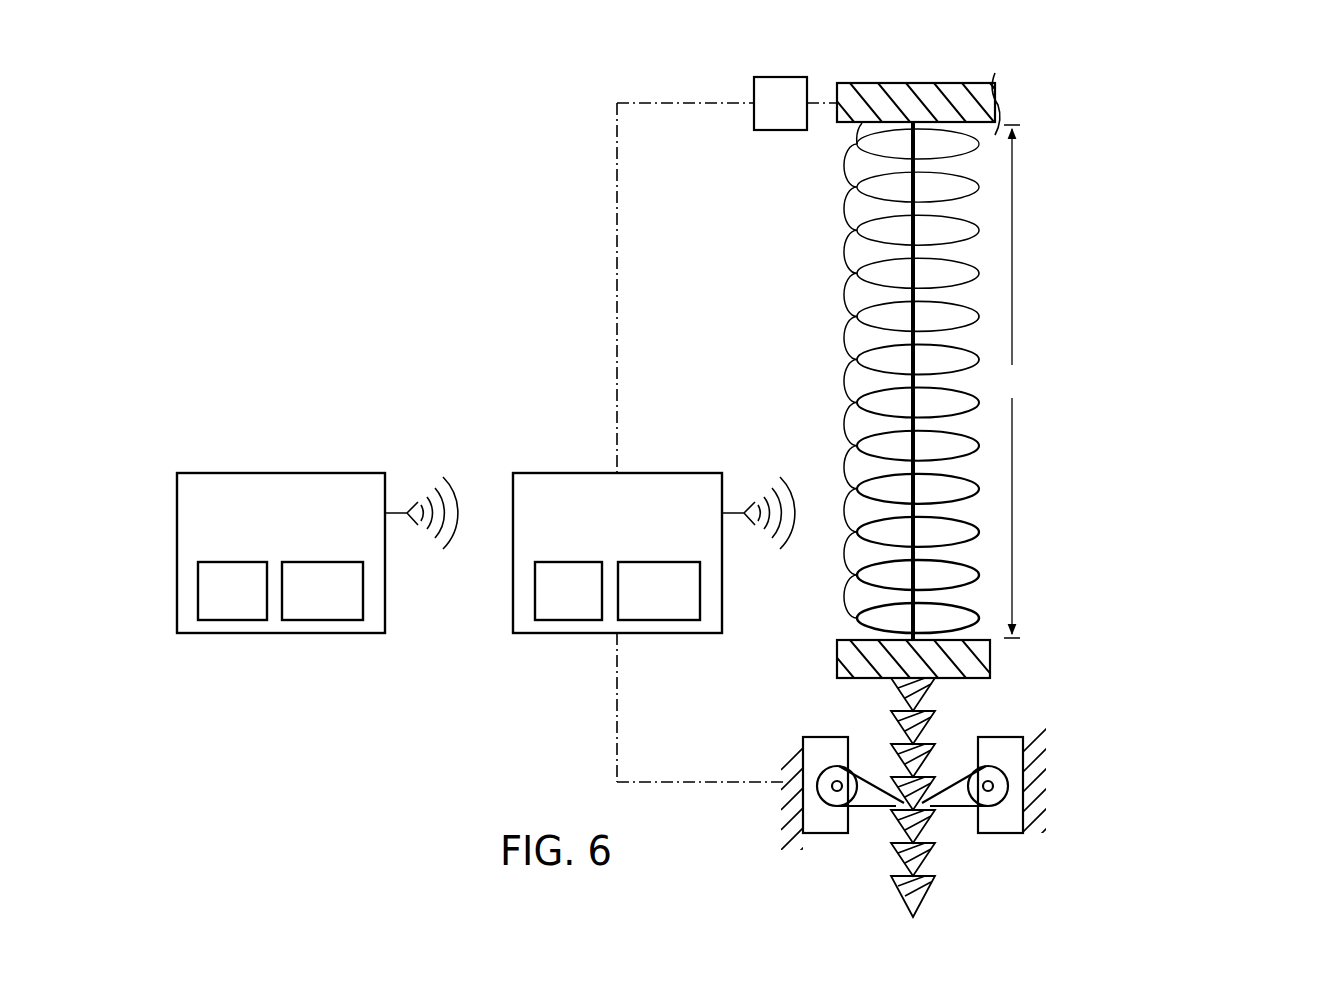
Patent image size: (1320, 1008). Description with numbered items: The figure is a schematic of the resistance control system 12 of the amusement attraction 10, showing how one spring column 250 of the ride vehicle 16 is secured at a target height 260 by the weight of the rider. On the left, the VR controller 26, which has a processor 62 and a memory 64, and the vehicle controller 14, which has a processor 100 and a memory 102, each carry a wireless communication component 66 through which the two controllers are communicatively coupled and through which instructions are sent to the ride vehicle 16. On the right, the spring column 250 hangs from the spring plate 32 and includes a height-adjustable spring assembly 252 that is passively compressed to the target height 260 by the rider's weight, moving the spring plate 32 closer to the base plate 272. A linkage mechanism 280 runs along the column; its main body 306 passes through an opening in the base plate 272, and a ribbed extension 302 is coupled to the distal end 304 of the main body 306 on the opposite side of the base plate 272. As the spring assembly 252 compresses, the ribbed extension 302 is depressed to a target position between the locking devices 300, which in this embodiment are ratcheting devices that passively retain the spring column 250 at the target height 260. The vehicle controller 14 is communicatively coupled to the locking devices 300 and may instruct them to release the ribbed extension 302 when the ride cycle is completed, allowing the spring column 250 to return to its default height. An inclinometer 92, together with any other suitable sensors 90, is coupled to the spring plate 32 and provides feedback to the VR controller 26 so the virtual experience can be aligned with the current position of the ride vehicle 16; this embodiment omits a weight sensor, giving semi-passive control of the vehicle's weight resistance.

The amusement attraction 10 is at (1228, 33).
The resistance control system 12 is at (1120, 78).
The vehicle controller 14 is at (615, 557).
The ride vehicle 16 is at (1040, 78).
The VR controller 26 is at (279, 557).
The spring plate 32 is at (878, 80).
The processor 62 is at (231, 620).
The memory 64 is at (319, 620).
The wireless communication component 66 is at (396, 513).
The sensors 90 is at (767, 77).
The inclinometer 92 is at (733, 86).
The processor 100 is at (567, 620).
The memory 102 is at (655, 620).
The spring column 250 is at (838, 381).
The height-adjustable spring assembly 252 is at (866, 378).
The target height 260 is at (1012, 381).
The base plate 272 is at (995, 660).
The linkage mechanism 280 is at (906, 253).
The locking devices 300 is at (825, 842).
The ribbed extension 302 is at (905, 788).
The distal end 304 is at (900, 660).
The main body 306 is at (847, 330).